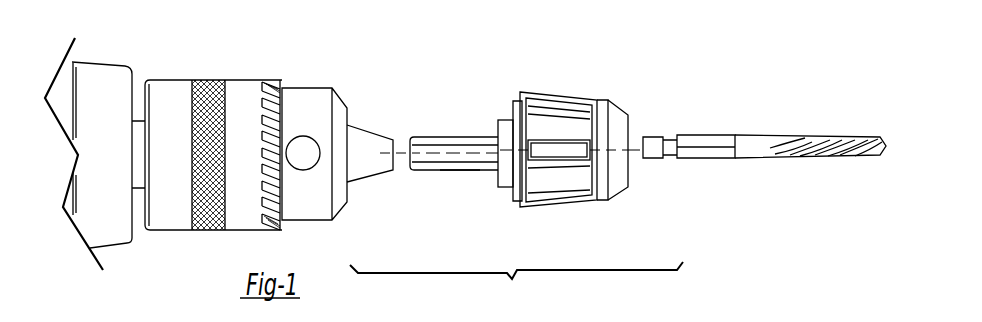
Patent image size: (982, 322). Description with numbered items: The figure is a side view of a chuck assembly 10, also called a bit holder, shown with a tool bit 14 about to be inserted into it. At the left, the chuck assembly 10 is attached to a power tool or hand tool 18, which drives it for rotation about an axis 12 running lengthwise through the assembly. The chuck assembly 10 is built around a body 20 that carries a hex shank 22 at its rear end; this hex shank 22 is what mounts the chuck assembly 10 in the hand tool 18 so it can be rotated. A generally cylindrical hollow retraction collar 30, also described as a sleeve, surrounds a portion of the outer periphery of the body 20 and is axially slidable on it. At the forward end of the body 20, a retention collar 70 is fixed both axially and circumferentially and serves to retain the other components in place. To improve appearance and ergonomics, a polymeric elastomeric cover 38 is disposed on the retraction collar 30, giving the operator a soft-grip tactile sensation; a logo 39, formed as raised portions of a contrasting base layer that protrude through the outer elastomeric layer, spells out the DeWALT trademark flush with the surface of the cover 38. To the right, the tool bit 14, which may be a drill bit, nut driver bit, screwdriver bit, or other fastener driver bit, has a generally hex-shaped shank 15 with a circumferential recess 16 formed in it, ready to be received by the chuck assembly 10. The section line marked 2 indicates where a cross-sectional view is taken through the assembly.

The section line 2- 2 is at (397, 147).
The chuck assembly 10 is at (587, 55).
The axis 12 is at (448, 150).
The tool bit 14 is at (731, 110).
The hex-shaped shank 15 is at (695, 143).
The circumferential recess 16 is at (672, 158).
The hand tool 18 is at (301, 100).
The body 20 is at (499, 177).
The hex shank 22 is at (462, 173).
The retraction collar 30 is at (521, 202).
The polymeric elastomeric cover 38 is at (547, 96).
The logo 39 is at (547, 142).
The retention collar 70 is at (618, 113).